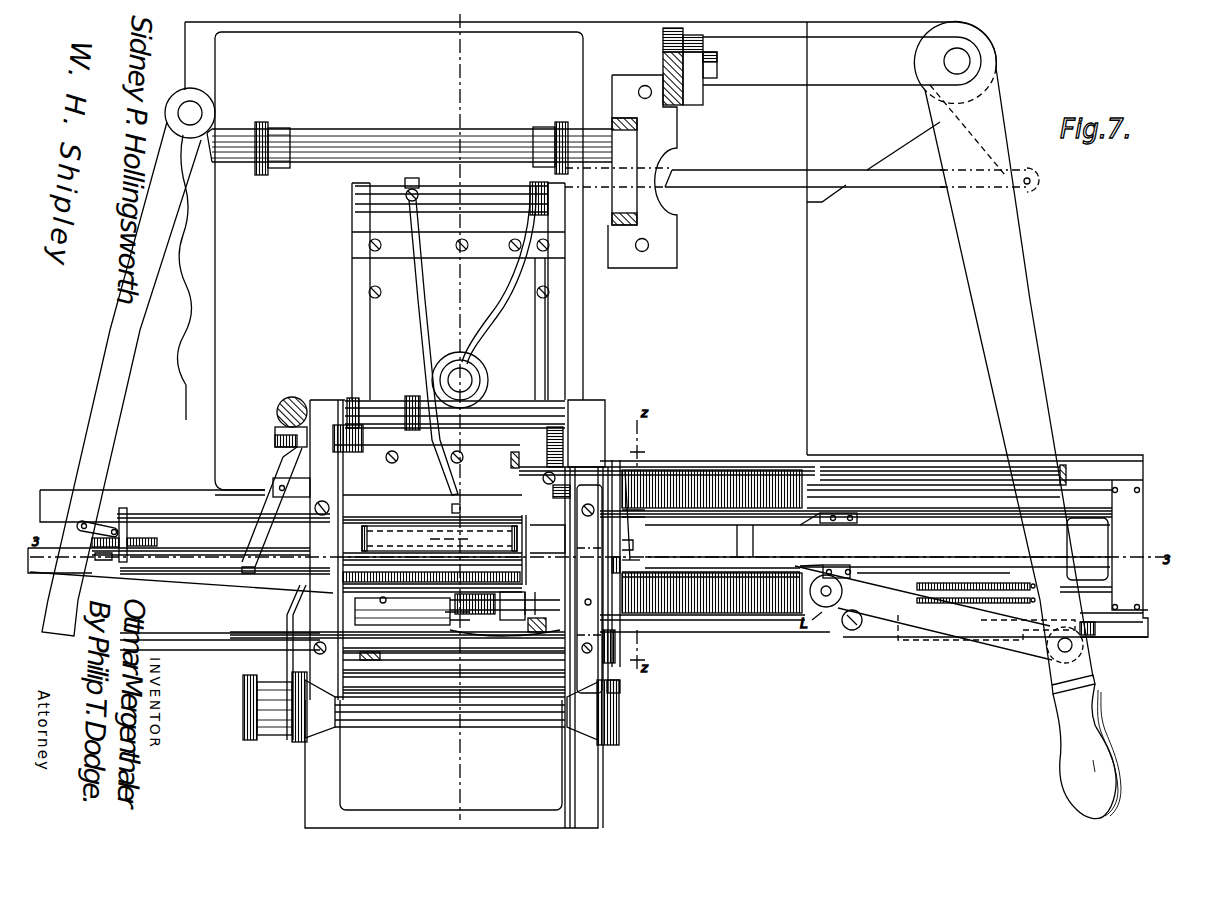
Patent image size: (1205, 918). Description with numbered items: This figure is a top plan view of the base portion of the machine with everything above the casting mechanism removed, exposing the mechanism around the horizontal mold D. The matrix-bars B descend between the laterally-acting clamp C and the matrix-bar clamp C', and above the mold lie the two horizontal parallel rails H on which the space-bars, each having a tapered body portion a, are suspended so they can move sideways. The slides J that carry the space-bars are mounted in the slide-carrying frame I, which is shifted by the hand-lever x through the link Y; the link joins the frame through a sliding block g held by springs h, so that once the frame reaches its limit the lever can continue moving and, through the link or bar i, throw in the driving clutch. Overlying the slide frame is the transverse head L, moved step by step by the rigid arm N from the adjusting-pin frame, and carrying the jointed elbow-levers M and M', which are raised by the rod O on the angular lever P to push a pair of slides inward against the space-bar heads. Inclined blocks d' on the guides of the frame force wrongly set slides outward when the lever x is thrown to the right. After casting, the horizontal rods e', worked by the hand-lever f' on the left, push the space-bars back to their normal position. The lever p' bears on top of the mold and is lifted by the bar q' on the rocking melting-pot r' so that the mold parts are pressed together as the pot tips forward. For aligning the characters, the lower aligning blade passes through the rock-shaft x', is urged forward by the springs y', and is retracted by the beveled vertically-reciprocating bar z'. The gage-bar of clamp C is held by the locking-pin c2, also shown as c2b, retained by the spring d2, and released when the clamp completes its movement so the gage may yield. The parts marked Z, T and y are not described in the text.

The link or bar i is at (802, 119).
The hand-lever x is at (1017, 419).
The link Y is at (923, 613).
The slide-carrying frame I is at (874, 546).
The key Z is at (1066, 472).
The sliding block g is at (905, 588).
The springs h is at (968, 592).
The inclined blocks d' is at (832, 545).
The laterally-acting clamp C is at (877, 541).
The slides J is at (714, 472).
The rod O is at (762, 480).
The elbow-lever M' is at (644, 515).
The elbow-lever M is at (646, 545).
The transverse bar or head L is at (640, 565).
The slide T is at (592, 614).
The bar q' is at (451, 198).
The lever p' is at (432, 345).
The rocking melting-pot r' is at (484, 296).
The angular lever P is at (512, 464).
The horizontal mold D is at (432, 509).
The horizontal parallel rails H is at (432, 546).
The matrix-bars B is at (439, 538).
The guide y is at (543, 542).
The locking-pin c2 is at (288, 608).
The horizontal rods e' is at (180, 570).
The matrix-bar clamp C' is at (201, 539).
The locking-pin c2b is at (125, 535).
The spring d2 is at (104, 561).
The hand-lever f' is at (128, 362).
The rigid arm N is at (380, 662).
The rock-shaft x' is at (402, 611).
The vertically-reciprocating bar z' is at (448, 616).
The tapered body portion a is at (505, 614).
The springs y' is at (454, 661).